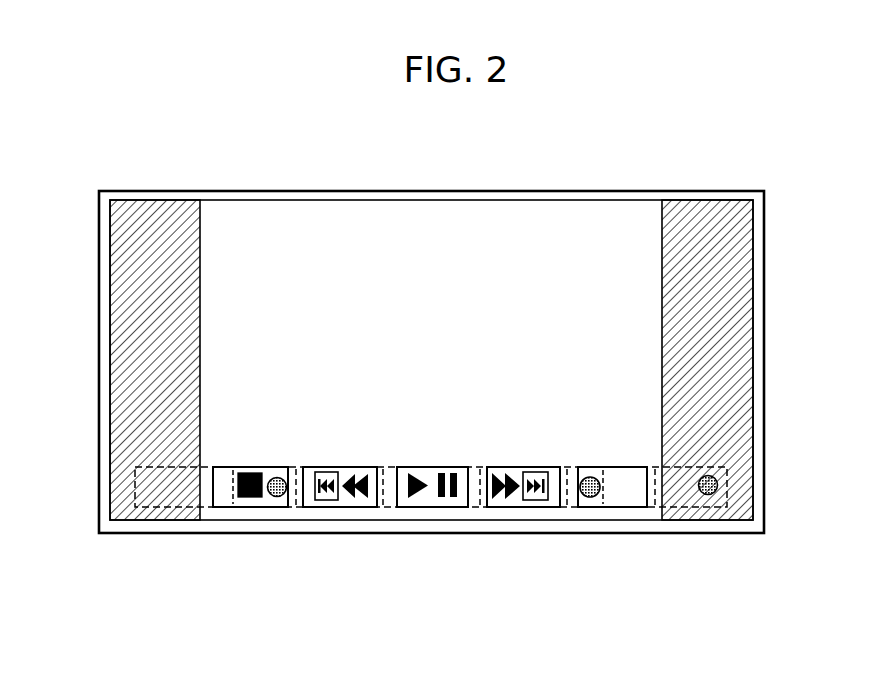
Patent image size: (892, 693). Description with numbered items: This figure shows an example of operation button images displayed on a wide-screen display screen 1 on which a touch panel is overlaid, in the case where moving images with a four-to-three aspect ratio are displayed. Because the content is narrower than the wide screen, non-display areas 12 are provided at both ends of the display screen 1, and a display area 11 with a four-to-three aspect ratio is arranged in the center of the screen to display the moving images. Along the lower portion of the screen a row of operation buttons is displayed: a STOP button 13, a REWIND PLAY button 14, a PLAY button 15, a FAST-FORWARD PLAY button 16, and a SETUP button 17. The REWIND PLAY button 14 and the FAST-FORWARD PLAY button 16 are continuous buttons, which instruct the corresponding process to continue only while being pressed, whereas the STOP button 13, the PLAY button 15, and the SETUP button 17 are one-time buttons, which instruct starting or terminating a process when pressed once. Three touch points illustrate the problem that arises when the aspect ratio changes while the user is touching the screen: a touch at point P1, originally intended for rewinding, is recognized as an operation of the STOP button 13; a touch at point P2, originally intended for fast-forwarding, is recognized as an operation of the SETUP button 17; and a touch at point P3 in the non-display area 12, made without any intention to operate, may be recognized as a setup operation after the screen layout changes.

The display screen 1 is at (357, 190).
The display area 11 is at (566, 200).
The non-display areas 12 is at (148, 212).
The STOP button 13 is at (242, 507).
The REWIND PLAY button 14 is at (335, 507).
The PLAY button 15 is at (430, 507).
The FAST-FORWARD PLAY button 16 is at (520, 507).
The SETUP button 17 is at (618, 507).
The point P1 is at (278, 496).
The point P2 is at (584, 497).
The point P3 is at (706, 495).